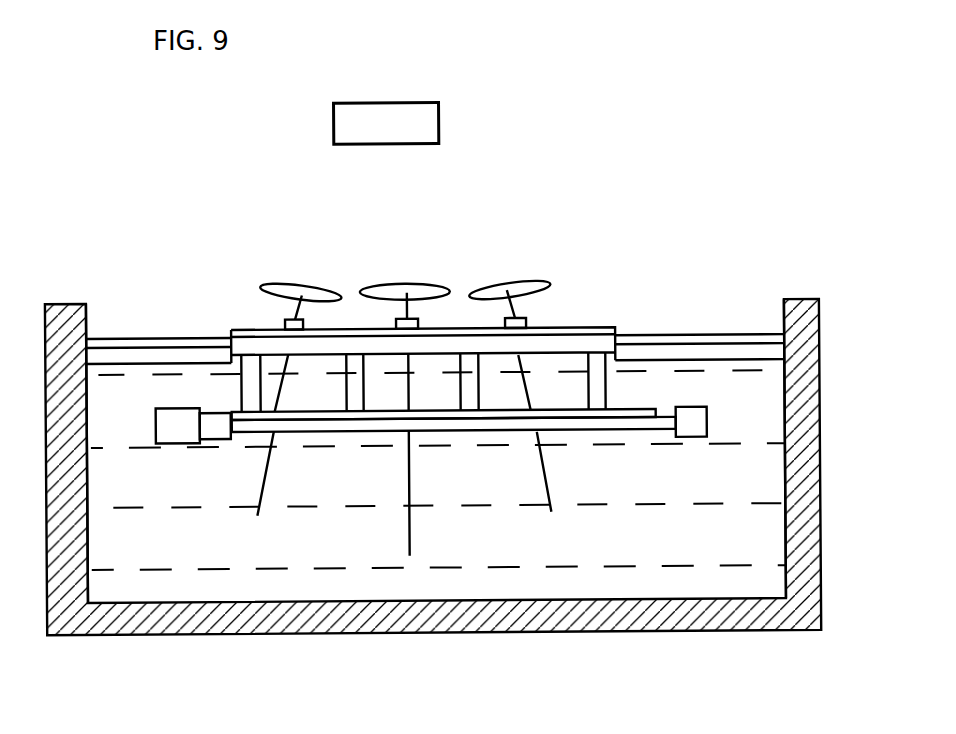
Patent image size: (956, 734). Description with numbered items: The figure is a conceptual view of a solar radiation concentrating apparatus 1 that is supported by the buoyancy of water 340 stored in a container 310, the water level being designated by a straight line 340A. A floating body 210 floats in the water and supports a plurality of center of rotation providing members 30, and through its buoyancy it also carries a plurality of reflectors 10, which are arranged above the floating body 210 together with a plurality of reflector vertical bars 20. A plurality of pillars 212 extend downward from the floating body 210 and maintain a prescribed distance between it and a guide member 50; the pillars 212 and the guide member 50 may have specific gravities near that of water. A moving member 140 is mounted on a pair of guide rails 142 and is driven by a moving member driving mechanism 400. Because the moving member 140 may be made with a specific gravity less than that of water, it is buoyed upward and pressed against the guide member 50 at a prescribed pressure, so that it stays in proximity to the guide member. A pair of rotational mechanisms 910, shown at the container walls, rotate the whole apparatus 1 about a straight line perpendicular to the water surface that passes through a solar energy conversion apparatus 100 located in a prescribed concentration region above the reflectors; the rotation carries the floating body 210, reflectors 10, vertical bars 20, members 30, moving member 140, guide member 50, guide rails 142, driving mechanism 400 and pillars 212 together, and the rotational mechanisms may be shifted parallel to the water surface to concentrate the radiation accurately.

The solar radiation concentrating apparatus 1 is at (697, 217).
The reflector 10 is at (268, 281).
The reflector vertical bar 20 is at (420, 535).
The center of rotation providing member 30 is at (285, 326).
The guide member 50 is at (630, 402).
The solar energy conversion apparatus 100 is at (448, 126).
The moving member 140 is at (667, 392).
The guide rail 142 is at (212, 405).
The floating body 210 is at (562, 320).
The pillar 212 is at (595, 373).
The container 310 is at (302, 642).
The water 340 is at (655, 552).
The straight line designating water level 340A is at (763, 327).
The moving member driving mechanism 400 is at (168, 405).
The rotational mechanism 910 is at (112, 357).